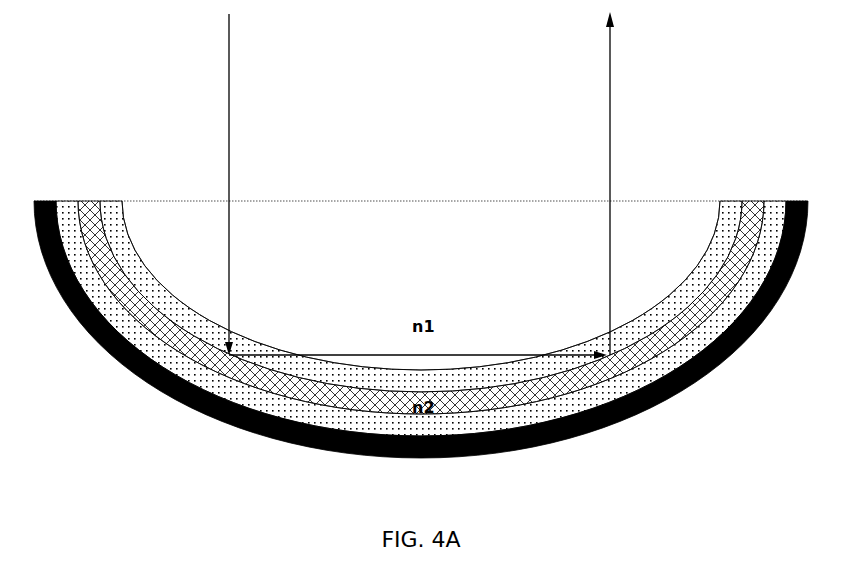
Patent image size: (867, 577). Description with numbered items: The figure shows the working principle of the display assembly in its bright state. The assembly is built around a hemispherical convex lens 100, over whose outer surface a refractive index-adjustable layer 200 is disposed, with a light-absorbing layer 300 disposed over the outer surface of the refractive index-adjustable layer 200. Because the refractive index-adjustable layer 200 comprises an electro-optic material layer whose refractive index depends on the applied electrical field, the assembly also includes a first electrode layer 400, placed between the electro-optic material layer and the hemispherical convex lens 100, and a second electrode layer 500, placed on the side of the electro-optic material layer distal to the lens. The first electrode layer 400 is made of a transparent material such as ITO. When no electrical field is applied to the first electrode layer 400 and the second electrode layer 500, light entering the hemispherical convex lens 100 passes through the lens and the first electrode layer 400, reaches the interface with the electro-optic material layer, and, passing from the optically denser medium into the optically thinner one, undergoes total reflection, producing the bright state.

The hemispherical convex lens 100 is at (241, 219).
The refractive index-adjustable layer 200 is at (738, 207).
The light-absorbing layer 300 is at (788, 202).
The first electrode layer 400 is at (112, 217).
The second electrode layer 500 is at (65, 217).